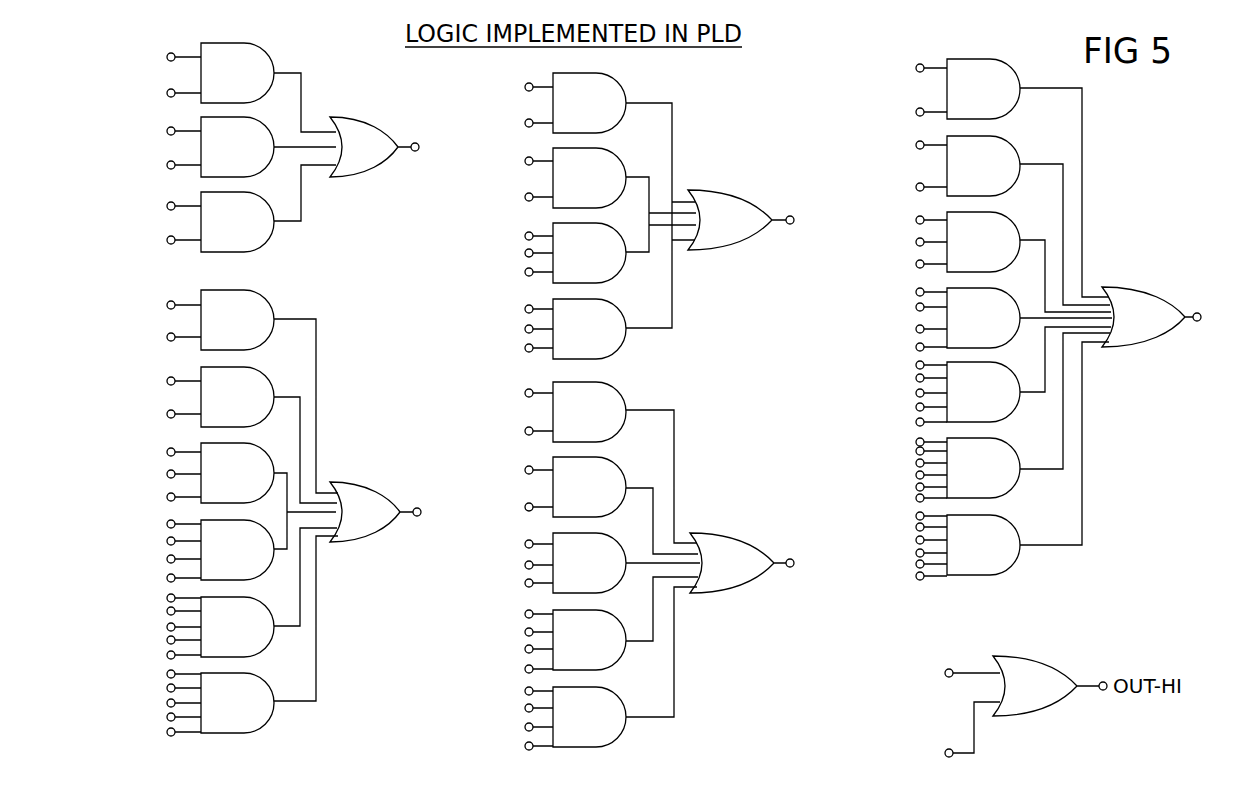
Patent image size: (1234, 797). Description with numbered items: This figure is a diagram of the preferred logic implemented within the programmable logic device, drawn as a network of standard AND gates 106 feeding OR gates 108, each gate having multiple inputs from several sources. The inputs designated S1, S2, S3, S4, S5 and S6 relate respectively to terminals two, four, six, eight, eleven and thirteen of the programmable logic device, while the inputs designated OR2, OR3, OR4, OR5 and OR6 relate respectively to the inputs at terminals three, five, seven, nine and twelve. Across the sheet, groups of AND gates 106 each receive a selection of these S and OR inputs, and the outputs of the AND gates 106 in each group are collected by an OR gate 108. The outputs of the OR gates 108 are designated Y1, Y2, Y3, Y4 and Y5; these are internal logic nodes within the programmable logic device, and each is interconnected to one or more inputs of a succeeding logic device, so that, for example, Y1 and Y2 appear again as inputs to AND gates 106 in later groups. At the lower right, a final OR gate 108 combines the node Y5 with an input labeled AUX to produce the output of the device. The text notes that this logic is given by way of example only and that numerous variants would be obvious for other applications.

The AND gates 106 is at (212, 82).
The OR gates 108 is at (352, 159).
The input S1 is at (507, 347).
The input S2 is at (171, 152).
The input S3 is at (504, 218).
The input S4 is at (494, 567).
The input S5 is at (134, 509).
The input S6 is at (883, 314).
The output Y1 is at (539, 325).
The output Y2 is at (520, 347).
The output Y3 is at (544, 394).
The output Y4 is at (685, 292).
The output Y5 is at (1073, 497).
The auxiliary input AUX is at (927, 753).
The input OR2 is at (526, 473).
The input OR3 is at (519, 476).
The input OR4 is at (505, 560).
The input OR5 is at (497, 503).
The input OR6 is at (861, 360).